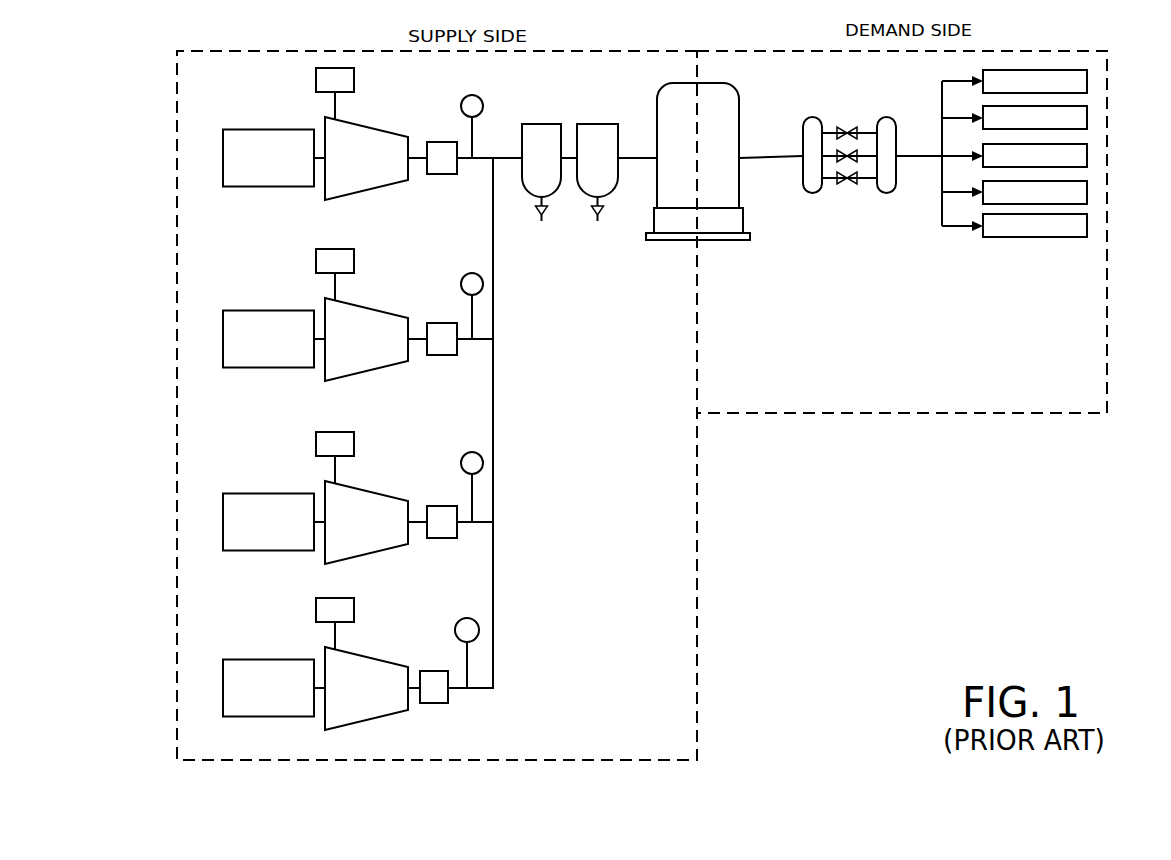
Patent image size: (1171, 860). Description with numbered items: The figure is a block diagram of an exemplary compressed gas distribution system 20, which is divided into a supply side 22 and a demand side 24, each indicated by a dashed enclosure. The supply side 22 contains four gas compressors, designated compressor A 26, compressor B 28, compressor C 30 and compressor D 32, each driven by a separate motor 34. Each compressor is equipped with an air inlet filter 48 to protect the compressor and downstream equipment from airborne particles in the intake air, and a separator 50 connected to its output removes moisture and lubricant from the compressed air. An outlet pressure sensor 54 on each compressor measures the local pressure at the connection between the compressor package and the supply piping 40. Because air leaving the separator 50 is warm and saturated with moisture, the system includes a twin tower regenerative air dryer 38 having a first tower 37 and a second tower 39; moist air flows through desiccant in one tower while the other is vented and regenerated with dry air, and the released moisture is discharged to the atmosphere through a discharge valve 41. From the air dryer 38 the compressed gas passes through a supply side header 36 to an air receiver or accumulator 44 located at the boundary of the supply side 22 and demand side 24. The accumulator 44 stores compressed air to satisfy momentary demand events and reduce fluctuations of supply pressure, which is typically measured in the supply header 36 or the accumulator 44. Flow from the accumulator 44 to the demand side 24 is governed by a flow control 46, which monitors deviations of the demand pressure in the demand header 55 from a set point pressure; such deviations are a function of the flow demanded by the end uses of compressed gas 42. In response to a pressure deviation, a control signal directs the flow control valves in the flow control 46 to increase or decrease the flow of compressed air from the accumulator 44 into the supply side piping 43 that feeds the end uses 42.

The compressed gas distribution system 20 is at (916, 521).
The supply side 22 is at (700, 508).
The demand side 24 is at (887, 413).
The compressor A 26 is at (412, 178).
The compressor B 28 is at (412, 362).
The compressor C 30 is at (408, 543).
The compressor D 32 is at (410, 708).
The motor 34 is at (232, 130).
The supply side header 36 is at (653, 159).
The first tower 37 is at (542, 123).
The air dryer 38 is at (569, 92).
The second tower 39 is at (590, 123).
The supply piping 40 is at (493, 325).
The discharge valve 41 is at (594, 218).
The end uses of compressed gas 42 is at (1093, 78).
The supply side piping 43 is at (942, 215).
The accumulator 44 is at (740, 187).
The flow control 46 is at (848, 182).
The air inlet filter 48 is at (356, 82).
The separator 50 is at (447, 140).
The outlet pressure sensor 54 is at (475, 95).
The demand header 55 is at (930, 157).